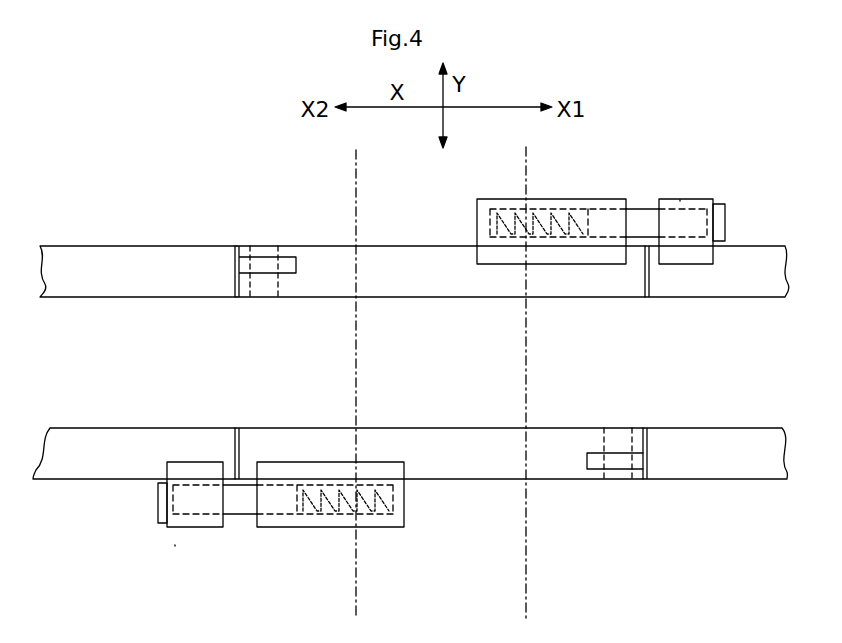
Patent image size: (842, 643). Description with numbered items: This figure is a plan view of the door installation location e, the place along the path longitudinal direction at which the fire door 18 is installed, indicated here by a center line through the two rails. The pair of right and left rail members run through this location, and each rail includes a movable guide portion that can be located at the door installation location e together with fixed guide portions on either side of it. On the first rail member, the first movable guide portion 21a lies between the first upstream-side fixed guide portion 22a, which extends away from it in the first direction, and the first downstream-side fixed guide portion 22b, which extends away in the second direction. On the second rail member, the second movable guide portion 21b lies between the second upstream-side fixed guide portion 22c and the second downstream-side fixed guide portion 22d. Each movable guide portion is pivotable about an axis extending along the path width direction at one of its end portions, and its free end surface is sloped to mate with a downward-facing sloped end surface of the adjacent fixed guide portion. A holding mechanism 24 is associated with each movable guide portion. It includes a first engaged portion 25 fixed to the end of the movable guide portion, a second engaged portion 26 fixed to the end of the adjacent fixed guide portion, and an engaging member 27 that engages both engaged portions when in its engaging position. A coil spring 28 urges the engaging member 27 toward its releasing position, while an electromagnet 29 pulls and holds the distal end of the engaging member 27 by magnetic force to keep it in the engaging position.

The second downstream-side fixed guide portion 22d is at (87, 258).
The second movable guide portion 21b is at (315, 255).
The second upstream-side fixed guide portion 22c is at (680, 288).
The first downstream-side fixed guide portion 22b is at (100, 443).
The first movable guide portion 21a is at (485, 468).
The first upstream-side fixed guide portion 22a is at (700, 463).
The holding mechanism 24 is at (637, 145).
The first engaged portion 25 is at (478, 227).
The second engaged portion 26 is at (680, 200).
The engaging member 27 is at (644, 210).
The coil spring 28 is at (555, 207).
The electromagnet 29 is at (725, 228).
The fire door 18 is at (527, 537).
The door installation location e is at (342, 383).